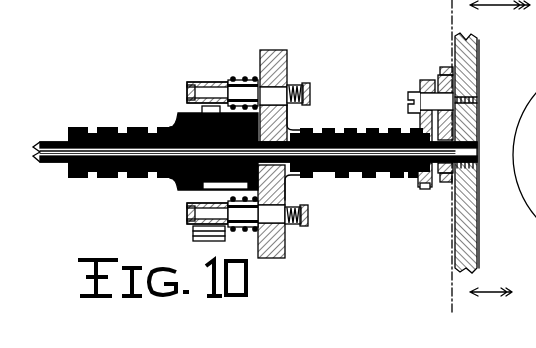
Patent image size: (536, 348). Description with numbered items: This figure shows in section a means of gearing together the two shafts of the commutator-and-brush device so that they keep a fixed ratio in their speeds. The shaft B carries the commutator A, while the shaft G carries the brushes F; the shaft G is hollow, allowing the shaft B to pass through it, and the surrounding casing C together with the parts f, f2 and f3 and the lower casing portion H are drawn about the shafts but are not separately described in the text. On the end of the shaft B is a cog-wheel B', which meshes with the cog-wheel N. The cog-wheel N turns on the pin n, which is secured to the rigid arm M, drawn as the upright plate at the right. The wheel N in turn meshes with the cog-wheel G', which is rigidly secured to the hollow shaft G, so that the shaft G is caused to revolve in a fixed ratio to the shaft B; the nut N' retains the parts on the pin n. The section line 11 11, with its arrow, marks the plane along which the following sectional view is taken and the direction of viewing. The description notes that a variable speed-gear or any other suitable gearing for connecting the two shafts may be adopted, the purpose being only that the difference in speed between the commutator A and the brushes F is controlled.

The shaft B is at (247, 131).
The casing tube C is at (113, 128).
The brushes F is at (203, 106).
The commutator A is at (201, 112).
The cylinder f is at (212, 93).
The slide piece f2 is at (203, 216).
The flange f3 is at (248, 80).
The shaft G is at (358, 114).
The lower casing section H is at (388, 175).
The cog-wheel G' is at (408, 199).
The cog-wheel B' is at (432, 215).
The cog-wheel N is at (436, 94).
The nut N' is at (405, 82).
The pin n is at (428, 100).
The rigid arm M is at (478, 60).
The section line 11 is at (483, 166).